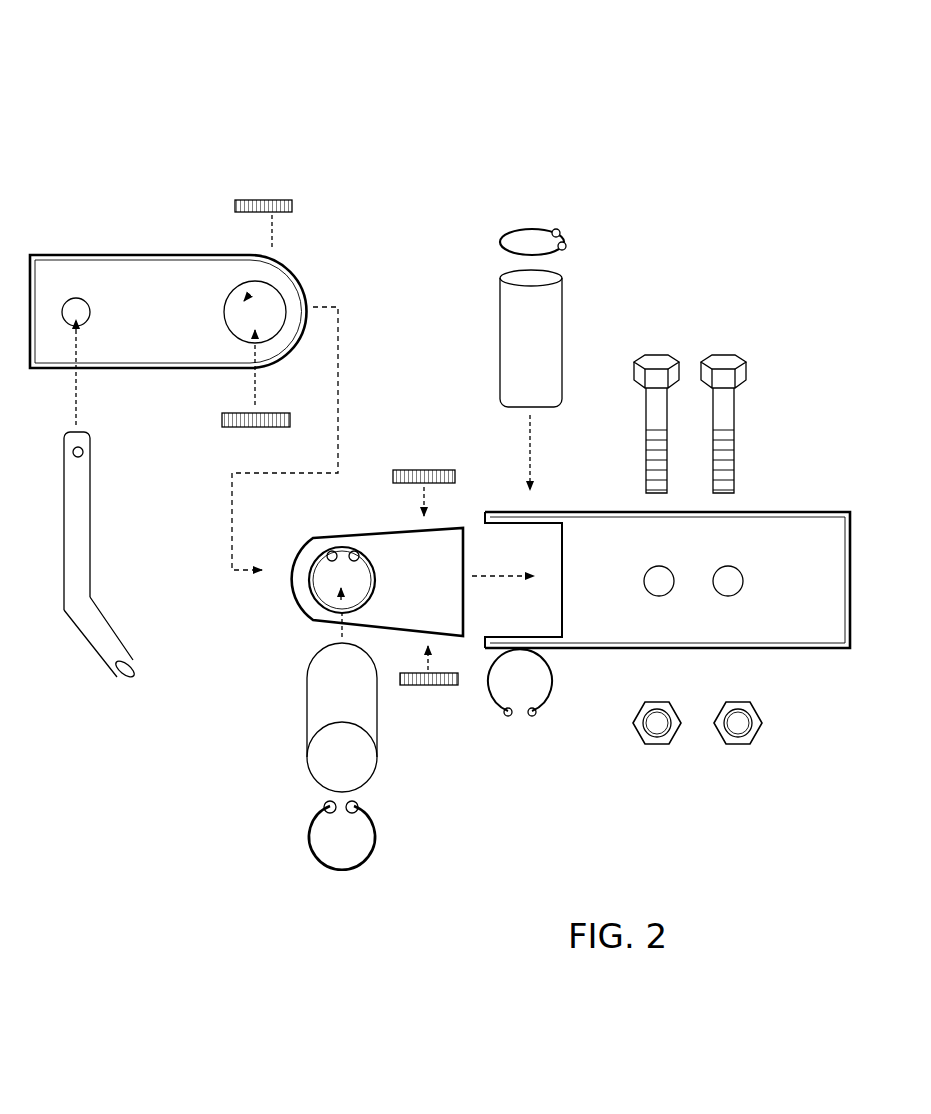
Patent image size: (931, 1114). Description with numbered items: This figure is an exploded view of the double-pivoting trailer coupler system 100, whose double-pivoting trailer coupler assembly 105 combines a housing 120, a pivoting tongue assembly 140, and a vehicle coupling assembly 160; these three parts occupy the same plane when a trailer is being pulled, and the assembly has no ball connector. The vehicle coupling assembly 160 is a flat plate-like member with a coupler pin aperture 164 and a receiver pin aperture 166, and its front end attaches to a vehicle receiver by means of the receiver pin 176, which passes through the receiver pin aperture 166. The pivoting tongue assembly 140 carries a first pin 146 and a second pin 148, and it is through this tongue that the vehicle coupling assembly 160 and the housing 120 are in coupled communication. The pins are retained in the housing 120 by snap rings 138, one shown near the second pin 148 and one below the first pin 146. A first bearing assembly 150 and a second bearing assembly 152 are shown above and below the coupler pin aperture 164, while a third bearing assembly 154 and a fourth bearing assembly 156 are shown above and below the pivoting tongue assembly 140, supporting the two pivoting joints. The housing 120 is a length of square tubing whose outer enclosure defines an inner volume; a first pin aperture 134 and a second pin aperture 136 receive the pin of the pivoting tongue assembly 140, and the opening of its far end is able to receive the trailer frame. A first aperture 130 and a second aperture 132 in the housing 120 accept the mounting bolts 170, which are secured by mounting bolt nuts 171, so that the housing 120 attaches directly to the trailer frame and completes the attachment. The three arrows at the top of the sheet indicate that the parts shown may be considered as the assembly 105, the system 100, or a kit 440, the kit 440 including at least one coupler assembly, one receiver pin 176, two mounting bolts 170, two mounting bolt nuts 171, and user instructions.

The double-pivoting trailer coupler assembly 105 is at (661, 76).
The double-pivoting trailer coupler system 100 is at (688, 103).
The kit 440 is at (702, 136).
The vehicle coupling assembly 160 is at (88, 250).
The receiver pin aperture 166 is at (66, 302).
The coupler pin aperture 164 is at (276, 310).
The first bearing assembly 150 is at (246, 196).
The second bearing assembly 152 is at (222, 419).
The receiver pin 176 is at (94, 518).
The pivoting tongue assembly 140 is at (363, 524).
The third bearing assembly 154 is at (415, 468).
The fourth bearing assembly 156 is at (428, 692).
The first pin 146 is at (303, 698).
The snap rings 138 is at (334, 872).
The second pin 148 is at (497, 337).
The first pin aperture 134 is at (541, 511).
The housing 120 is at (762, 510).
The first aperture 130 is at (665, 600).
The second aperture 132 is at (745, 588).
The second pin aperture 136 is at (528, 652).
The mounting bolts 170 is at (728, 350).
The mounting bolt nuts 171 is at (662, 750).